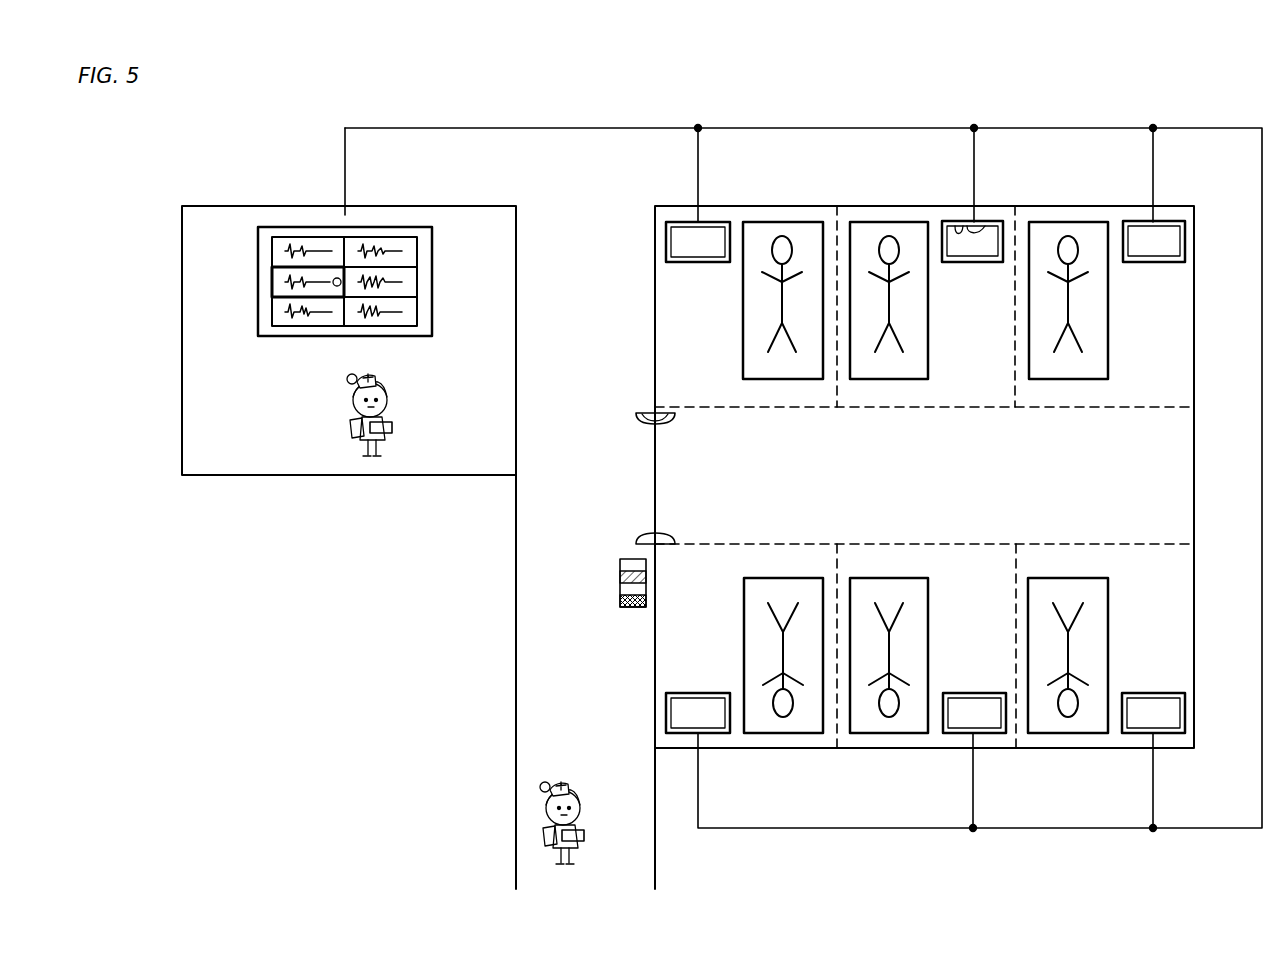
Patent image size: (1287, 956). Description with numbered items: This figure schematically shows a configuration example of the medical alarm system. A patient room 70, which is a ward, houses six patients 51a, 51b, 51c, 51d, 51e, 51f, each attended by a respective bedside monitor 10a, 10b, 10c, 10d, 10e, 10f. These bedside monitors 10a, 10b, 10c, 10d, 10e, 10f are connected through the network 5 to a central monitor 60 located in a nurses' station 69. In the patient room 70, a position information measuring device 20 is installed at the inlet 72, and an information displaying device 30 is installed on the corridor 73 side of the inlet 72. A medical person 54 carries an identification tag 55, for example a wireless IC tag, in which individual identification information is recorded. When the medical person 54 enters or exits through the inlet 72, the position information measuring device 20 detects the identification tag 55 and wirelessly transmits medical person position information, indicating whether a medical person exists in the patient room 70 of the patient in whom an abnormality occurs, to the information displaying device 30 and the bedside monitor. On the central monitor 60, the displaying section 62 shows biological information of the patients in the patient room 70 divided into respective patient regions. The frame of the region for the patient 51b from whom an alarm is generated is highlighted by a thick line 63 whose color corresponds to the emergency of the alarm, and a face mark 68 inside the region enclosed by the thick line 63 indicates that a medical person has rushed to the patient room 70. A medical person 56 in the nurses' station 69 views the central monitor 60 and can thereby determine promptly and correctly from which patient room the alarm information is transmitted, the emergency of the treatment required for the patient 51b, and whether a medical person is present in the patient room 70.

The network 5 is at (545, 128).
The bedside monitor 10a is at (712, 222).
The bedside monitor 10b is at (962, 221).
The bedside monitor 10c is at (1142, 221).
The bedside monitor 10d is at (720, 733).
The bedside monitor 10e is at (958, 733).
The bedside monitor 10f is at (1130, 733).
The position information measuring device 20 is at (676, 420).
The information displaying device 30 is at (620, 590).
The patient 51a is at (782, 222).
The patient 51b is at (889, 222).
The patient 51c is at (1068, 222).
The patient 51d is at (787, 717).
The patient 51e is at (889, 717).
The patient 51f is at (1065, 717).
The medical person 54 is at (591, 805).
The identification tag 55 is at (393, 427).
The medical person 56 is at (407, 405).
The central monitor 60 is at (311, 279).
The displaying section 62 is at (306, 330).
The thick line 63 is at (272, 282).
The face mark 68 is at (336, 264).
The nurses' station 69 is at (220, 206).
The patient room 70 is at (650, 218).
The inlet 72 is at (655, 476).
The corridor 73 is at (572, 292).